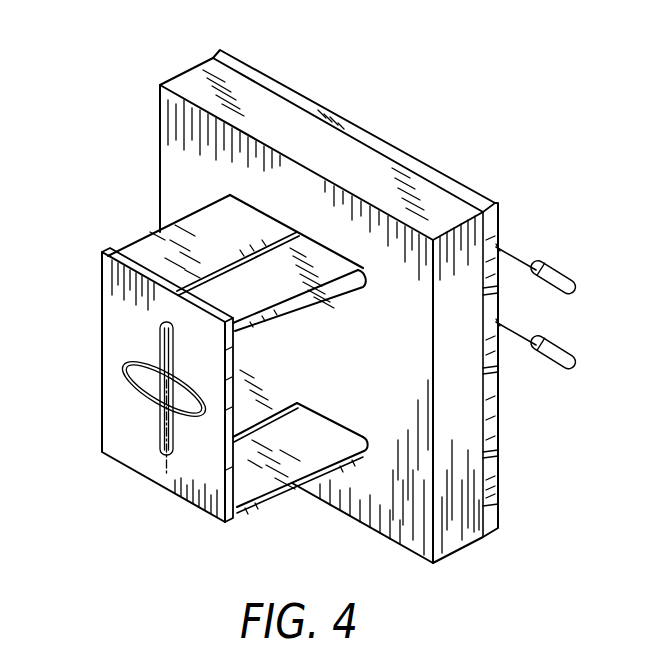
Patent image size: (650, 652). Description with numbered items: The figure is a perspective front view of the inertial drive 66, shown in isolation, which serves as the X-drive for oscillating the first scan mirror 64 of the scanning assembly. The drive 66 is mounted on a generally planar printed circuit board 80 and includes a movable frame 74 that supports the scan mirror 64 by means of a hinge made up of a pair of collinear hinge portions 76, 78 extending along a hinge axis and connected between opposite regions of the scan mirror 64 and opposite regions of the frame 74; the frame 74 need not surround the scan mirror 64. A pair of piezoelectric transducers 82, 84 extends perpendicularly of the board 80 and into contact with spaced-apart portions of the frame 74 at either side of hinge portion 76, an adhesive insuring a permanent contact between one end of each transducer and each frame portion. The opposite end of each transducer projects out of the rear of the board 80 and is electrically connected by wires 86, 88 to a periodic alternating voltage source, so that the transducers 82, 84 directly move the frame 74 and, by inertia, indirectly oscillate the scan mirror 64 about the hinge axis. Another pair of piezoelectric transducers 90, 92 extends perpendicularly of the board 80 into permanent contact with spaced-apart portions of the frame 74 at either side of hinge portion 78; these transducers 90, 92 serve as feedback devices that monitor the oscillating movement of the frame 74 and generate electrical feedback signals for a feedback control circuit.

The inertial drive 66 is at (160, 56).
The printed circuit board 80 is at (387, 148).
The piezoelectric transducer 82 is at (157, 247).
The piezoelectric transducer 84 is at (268, 296).
The movable frame 74 is at (115, 308).
The hinge portion 76 is at (160, 339).
The hinge portion 78 is at (170, 443).
The first scan mirror 64 is at (152, 392).
The piezoelectric transducer 90 is at (272, 402).
The piezoelectric transducer 92 is at (245, 486).
The wire 86 is at (555, 273).
The wire 88 is at (557, 366).